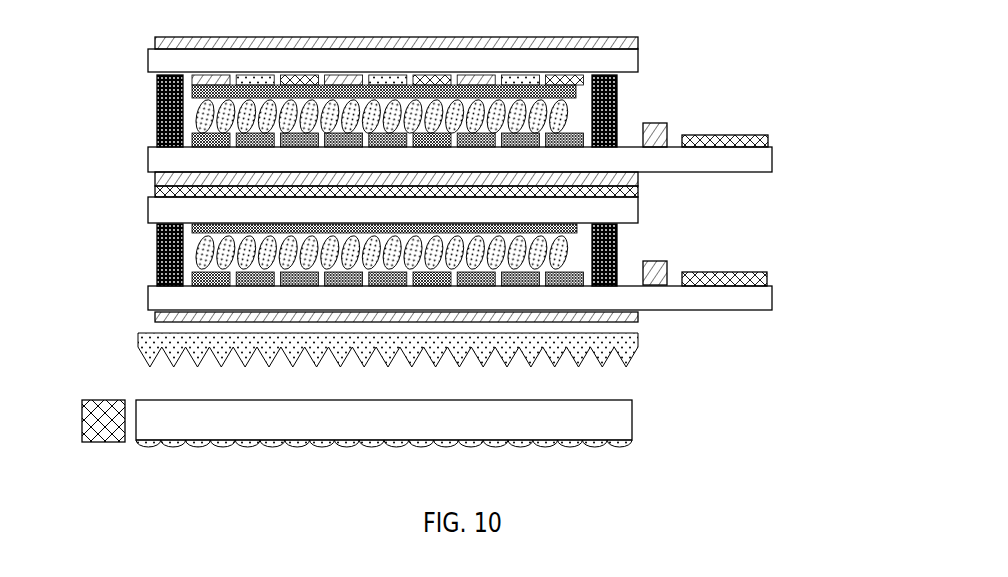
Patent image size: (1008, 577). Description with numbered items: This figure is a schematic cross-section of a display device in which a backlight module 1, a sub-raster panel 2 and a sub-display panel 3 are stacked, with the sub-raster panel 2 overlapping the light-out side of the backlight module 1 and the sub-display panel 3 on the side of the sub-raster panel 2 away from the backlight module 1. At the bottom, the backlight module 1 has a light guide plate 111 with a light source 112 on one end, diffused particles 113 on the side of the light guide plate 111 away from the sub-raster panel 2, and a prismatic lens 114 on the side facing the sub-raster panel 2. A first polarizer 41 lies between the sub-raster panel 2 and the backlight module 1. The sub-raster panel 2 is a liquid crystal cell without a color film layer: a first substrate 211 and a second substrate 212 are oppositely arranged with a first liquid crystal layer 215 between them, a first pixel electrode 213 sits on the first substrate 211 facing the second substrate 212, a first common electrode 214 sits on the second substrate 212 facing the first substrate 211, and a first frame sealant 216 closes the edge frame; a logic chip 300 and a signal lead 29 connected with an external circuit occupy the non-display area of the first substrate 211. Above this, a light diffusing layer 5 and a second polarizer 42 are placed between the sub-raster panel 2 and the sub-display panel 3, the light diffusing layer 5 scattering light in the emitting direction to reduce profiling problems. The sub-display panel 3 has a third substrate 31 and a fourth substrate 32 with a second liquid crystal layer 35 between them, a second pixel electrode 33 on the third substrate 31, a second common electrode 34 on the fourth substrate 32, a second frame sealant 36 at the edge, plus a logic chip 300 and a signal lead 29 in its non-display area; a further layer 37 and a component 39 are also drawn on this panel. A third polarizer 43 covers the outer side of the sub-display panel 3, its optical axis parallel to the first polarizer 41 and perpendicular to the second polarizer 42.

The backlight module 1 is at (458, 406).
The light guide plate 111 is at (613, 420).
The light source 112 is at (82, 418).
The diffused particles 113 is at (620, 447).
The prismatic lens 114 is at (640, 341).
The sub-raster panel 2 is at (481, 252).
The first substrate 211 is at (501, 297).
The second substrate 212 is at (612, 205).
The first pixel electrode 213 is at (157, 278).
The first common electrode 214 is at (157, 226).
The first liquid crystal layer 215 is at (157, 243).
The first frame sealant 216 is at (157, 262).
The signal lead 29 is at (737, 272).
The sub-display panel 3 is at (483, 108).
The third substrate 31 is at (486, 158).
The fourth substrate 32 is at (613, 56).
The second pixel electrode 33 is at (157, 140).
The second common electrode 34 is at (157, 91).
The second liquid crystal layer 35 is at (157, 108).
The second frame sealant 36 is at (157, 125).
The color filter layer 37 is at (208, 80).
The driver chip of first panel 39 is at (730, 137).
The logic chip 300 is at (660, 131).
The first polarizer 41 is at (640, 317).
The second polarizer 42 is at (753, 184).
The third polarizer 43 is at (640, 42).
The light diffusing layer 5 is at (640, 192).